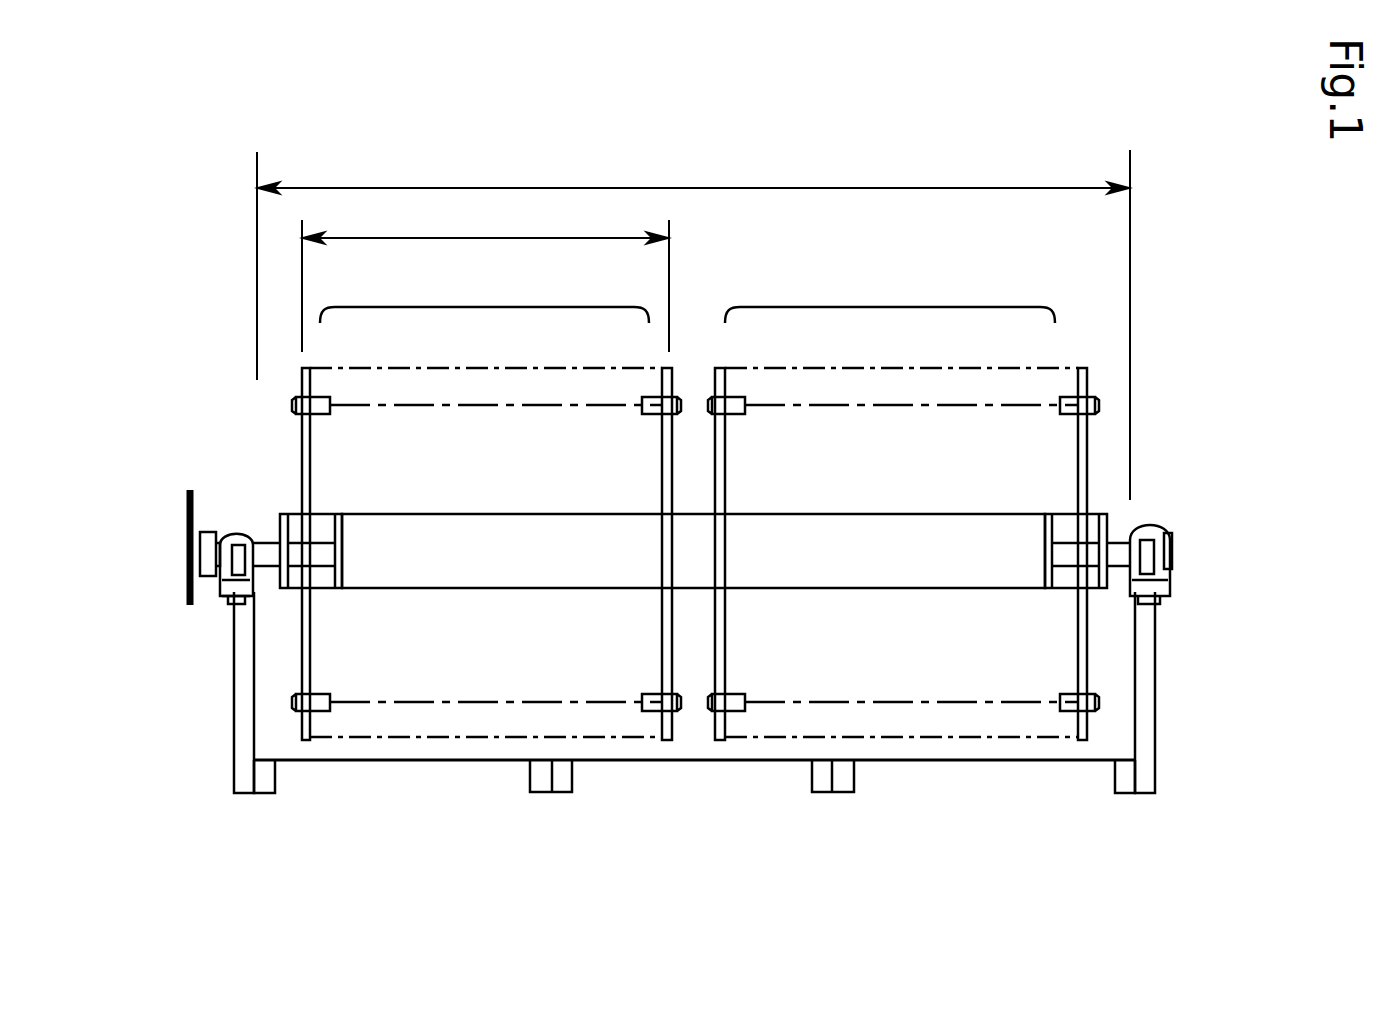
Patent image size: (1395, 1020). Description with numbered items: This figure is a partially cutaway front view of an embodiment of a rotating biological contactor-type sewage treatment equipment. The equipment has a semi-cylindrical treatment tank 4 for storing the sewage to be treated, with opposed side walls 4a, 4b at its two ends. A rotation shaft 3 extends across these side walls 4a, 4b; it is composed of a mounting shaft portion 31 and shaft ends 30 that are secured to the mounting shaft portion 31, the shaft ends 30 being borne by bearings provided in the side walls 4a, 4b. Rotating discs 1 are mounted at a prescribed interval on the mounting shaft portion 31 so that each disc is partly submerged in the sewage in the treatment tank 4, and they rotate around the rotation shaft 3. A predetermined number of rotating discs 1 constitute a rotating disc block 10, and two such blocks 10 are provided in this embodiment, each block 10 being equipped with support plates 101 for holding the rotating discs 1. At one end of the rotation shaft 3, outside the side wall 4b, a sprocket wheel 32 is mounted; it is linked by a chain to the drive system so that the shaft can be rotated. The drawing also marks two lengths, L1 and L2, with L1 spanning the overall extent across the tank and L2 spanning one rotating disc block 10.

The rotating disc 1 is at (302, 380).
The rotation shaft 3 is at (945, 508).
The treatment tank 4 is at (455, 765).
The side wall 4a is at (1150, 678).
The side wall 4b is at (242, 662).
The rotating disc block 10 is at (487, 306).
The shaft end 30 is at (320, 572).
The mounting shaft portion 31 is at (437, 512).
The sprocket wheel 32 is at (186, 517).
The support plate 101 is at (300, 455).
The overall length L1 is at (737, 188).
The roll unit length L2 is at (540, 238).